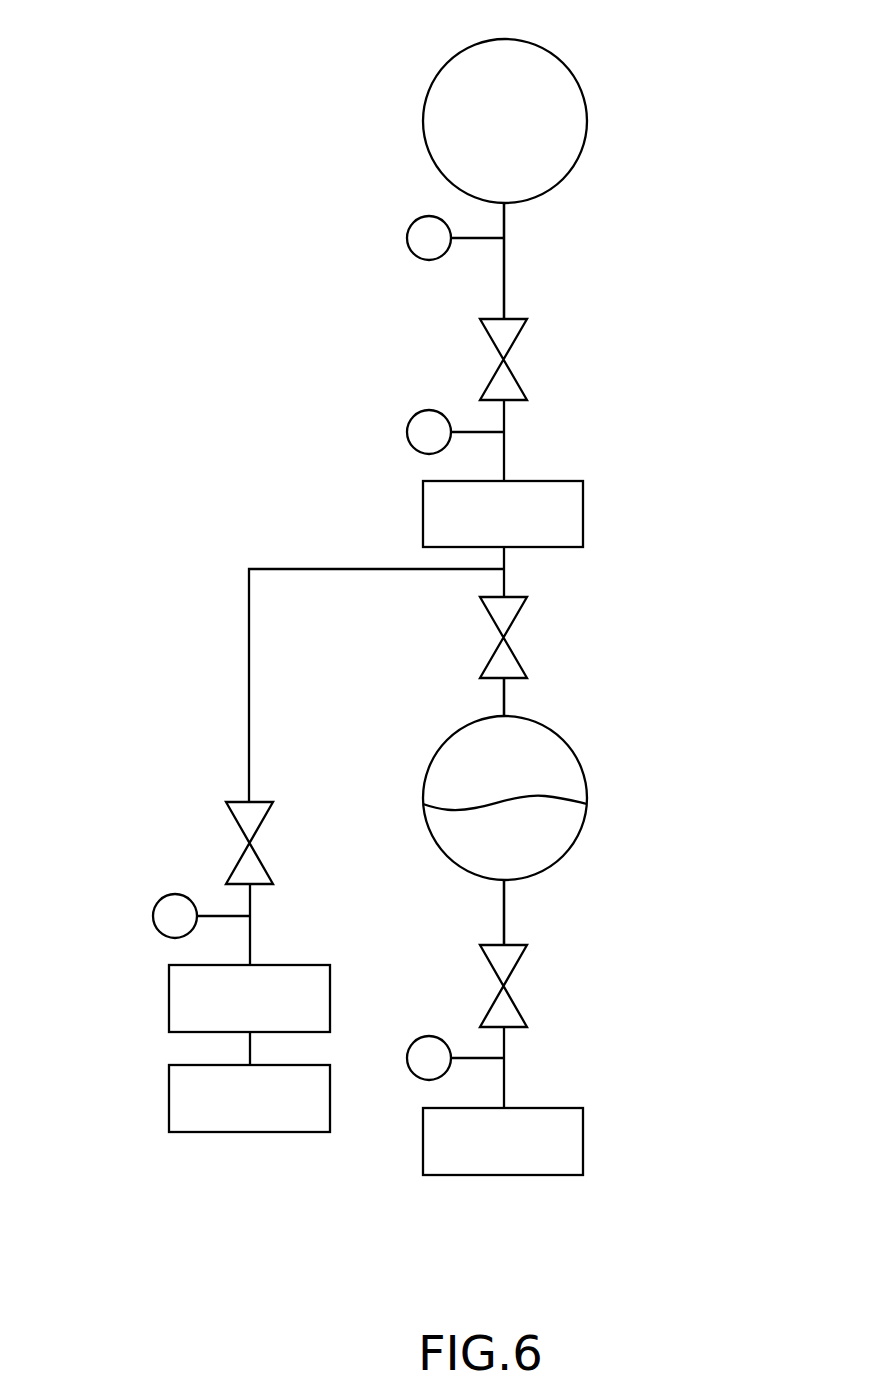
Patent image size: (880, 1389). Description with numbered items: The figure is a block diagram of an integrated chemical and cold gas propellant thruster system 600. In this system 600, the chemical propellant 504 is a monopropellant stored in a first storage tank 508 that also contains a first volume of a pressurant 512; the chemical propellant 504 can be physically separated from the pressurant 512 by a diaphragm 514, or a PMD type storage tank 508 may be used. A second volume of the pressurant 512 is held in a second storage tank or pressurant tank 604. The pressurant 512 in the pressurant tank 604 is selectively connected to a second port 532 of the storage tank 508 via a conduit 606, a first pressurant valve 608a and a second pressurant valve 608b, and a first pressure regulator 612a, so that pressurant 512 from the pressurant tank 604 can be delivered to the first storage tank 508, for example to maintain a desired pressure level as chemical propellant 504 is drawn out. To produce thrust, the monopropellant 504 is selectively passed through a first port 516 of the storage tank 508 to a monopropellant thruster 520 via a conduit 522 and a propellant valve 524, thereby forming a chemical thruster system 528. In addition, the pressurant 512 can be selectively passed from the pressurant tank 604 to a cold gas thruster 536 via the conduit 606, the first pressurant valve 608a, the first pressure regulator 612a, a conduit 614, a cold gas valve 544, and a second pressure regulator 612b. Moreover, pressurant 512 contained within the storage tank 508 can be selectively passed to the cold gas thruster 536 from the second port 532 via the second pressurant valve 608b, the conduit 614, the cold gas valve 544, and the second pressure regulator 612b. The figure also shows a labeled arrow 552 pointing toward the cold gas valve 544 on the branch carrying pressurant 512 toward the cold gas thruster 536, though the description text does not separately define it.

The integrated chemical and cold gas propellant thruster system 600 is at (312, 85).
The pressurant 512 is at (527, 63).
The pressurant tank 604 is at (555, 187).
The conduit 606 is at (504, 287).
The first pressurant valve 608a is at (513, 342).
The first pressure regulator 612a is at (583, 508).
The second pressurant valve 608b is at (520, 600).
The second port 532 is at (504, 712).
The first storage tank 508 is at (430, 750).
The diaphragm 514 is at (428, 808).
The chemical propellant 504 is at (563, 832).
The first port 516 is at (505, 883).
The conduit 522 is at (504, 922).
The propellant valve 524 is at (518, 963).
The monopropellant thruster 520 is at (583, 1143).
The chemical thruster system 528 is at (557, 1210).
The conduit 614 is at (249, 627).
The cold gas flow 552 is at (227, 775).
The cold gas valve 544 is at (250, 872).
The second pressure regulator 612b is at (169, 990).
The cold gas thruster 536 is at (169, 1098).